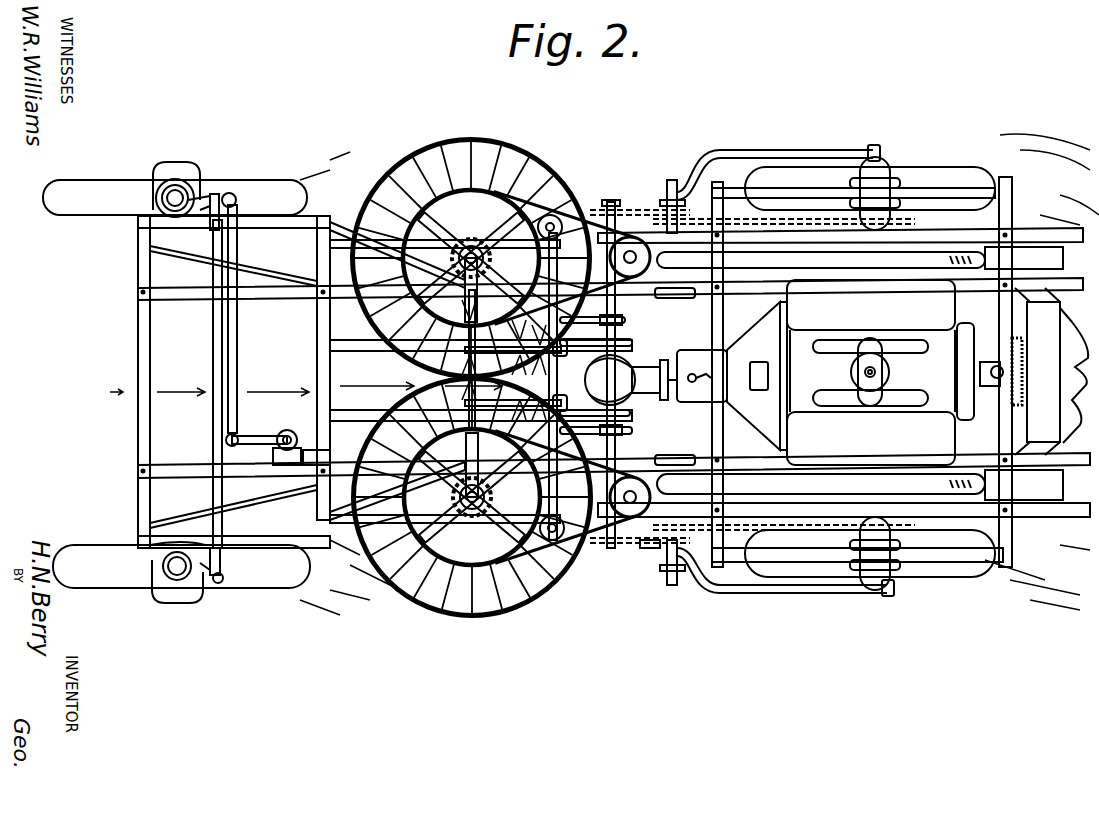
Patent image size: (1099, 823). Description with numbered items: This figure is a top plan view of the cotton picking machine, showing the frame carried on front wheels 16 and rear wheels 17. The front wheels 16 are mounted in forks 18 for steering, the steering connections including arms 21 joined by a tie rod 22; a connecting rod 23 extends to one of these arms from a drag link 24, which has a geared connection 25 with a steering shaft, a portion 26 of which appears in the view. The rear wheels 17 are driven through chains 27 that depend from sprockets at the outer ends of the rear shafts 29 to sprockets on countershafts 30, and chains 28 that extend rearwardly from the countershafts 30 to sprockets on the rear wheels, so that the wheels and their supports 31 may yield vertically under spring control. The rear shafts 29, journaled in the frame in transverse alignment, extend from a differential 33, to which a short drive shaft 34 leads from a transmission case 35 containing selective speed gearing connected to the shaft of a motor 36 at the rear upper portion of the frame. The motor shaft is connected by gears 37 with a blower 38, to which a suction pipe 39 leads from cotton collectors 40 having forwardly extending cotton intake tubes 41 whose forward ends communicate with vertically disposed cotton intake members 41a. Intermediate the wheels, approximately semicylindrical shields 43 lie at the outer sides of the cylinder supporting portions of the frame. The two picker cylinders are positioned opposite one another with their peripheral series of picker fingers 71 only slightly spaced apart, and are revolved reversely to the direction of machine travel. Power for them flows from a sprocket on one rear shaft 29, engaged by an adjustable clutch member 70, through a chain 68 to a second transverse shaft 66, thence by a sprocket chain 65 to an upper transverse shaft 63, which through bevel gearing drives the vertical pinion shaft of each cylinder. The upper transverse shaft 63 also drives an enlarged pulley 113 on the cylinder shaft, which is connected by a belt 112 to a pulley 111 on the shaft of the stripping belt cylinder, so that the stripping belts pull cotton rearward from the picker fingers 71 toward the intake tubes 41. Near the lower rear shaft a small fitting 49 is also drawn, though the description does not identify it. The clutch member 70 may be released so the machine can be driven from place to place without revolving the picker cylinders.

The front wheels 16 is at (90, 216).
The rear wheels 17 is at (915, 172).
The forks 18 is at (178, 164).
The arms 21 is at (214, 194).
The tie rod 22 is at (213, 418).
The connecting rod 23 is at (243, 335).
The drag link 24 is at (253, 436).
The geared connection 25 is at (287, 466).
The steering shaft portion 26 is at (313, 450).
The chains 27 is at (676, 185).
The chains 28 is at (762, 218).
The rear shafts 29 is at (616, 298).
The countershafts 30 is at (668, 566).
The rear wheel supports 31 is at (886, 578).
The differential 33 is at (619, 392).
The drive shaft 34 is at (666, 399).
The transmission case 35 is at (696, 356).
The motor 36 is at (806, 393).
The gears 37 is at (1012, 393).
The blower 38 is at (1022, 372).
The suction pipe 39 is at (1075, 405).
The cotton collectors 40 is at (860, 373).
The cotton intake tubes 41 is at (843, 262).
The cotton intake members 41a is at (676, 296).
The shields 43 is at (447, 138).
The support 49 is at (688, 461).
The upper transverse shaft 63 is at (471, 354).
The sprocket chain 65 is at (521, 355).
The second transverse shaft 66 is at (558, 357).
The chain 68 is at (625, 341).
The clutch member 70 is at (621, 320).
The picker fingers 71 is at (420, 351).
The pulley 111 is at (633, 237).
The belt 112 is at (591, 217).
The enlarged pulley 113 is at (517, 200).